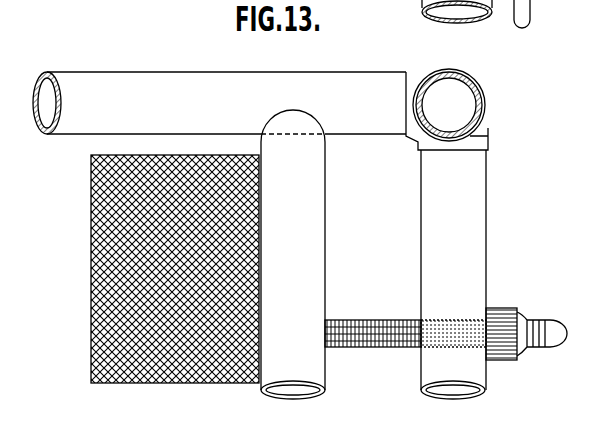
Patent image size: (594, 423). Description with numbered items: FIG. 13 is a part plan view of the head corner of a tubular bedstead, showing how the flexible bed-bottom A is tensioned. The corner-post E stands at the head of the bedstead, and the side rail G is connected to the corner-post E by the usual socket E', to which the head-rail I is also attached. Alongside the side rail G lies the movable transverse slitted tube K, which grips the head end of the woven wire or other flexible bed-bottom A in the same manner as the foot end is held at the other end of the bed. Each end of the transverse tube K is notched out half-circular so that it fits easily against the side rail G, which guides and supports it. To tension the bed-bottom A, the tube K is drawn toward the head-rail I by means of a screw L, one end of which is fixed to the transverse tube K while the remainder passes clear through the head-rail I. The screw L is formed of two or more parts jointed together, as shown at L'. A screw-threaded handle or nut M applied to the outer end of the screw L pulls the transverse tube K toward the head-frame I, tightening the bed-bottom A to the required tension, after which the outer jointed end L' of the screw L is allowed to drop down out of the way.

The bed-bottom A is at (90, 283).
The side rail G is at (219, 103).
The slitted tube K is at (312, 254).
The corner-post E is at (449, 105).
The socket E' is at (462, 111).
The head-rail I is at (458, 262).
The screw L is at (405, 318).
The nut M is at (522, 304).
The jointed end L' is at (538, 344).